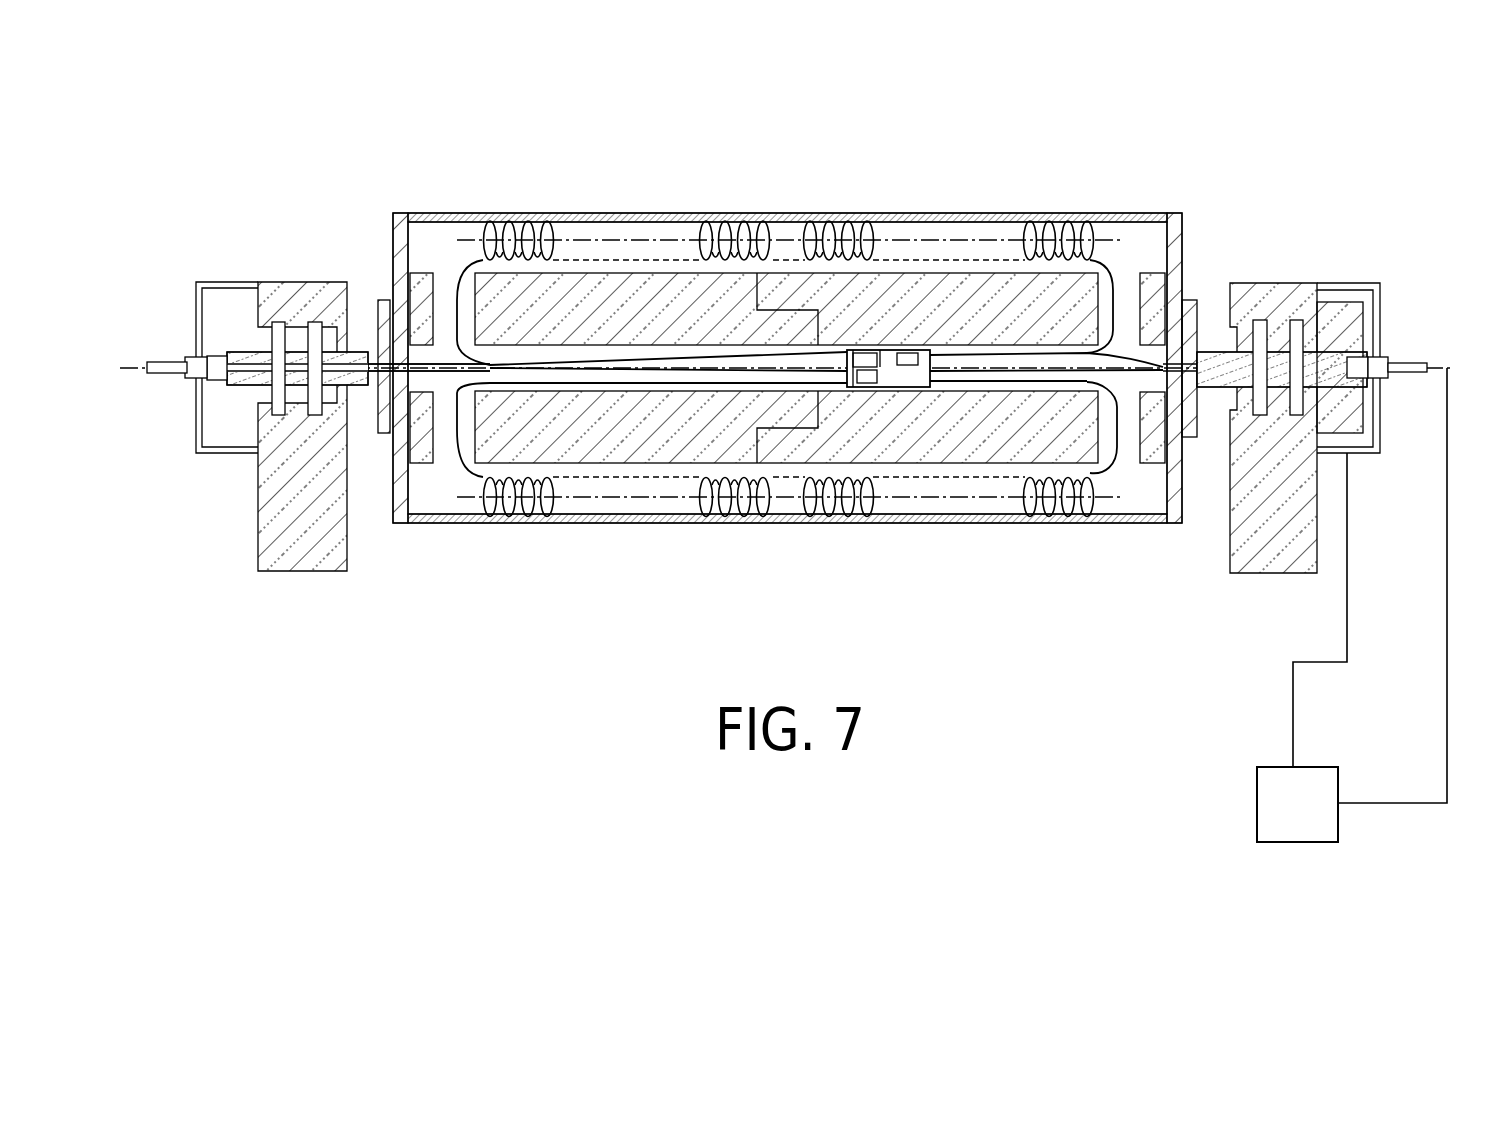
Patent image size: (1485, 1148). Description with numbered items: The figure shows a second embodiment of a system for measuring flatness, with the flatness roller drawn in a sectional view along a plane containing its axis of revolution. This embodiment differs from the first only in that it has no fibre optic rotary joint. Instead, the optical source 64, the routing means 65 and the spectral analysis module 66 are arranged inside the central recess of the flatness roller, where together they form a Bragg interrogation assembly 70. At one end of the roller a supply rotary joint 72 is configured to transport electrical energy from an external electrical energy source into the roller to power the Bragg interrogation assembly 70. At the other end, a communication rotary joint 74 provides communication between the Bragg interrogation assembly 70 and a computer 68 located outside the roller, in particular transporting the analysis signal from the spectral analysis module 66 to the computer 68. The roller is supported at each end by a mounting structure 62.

The support bracket 62 is at (1338, 318).
The optical source 64 is at (867, 357).
The routing means 65 is at (908, 357).
The spectral analysis module 66 is at (872, 377).
The computer 68 is at (1297, 804).
The Bragg interrogation assembly 70 is at (917, 390).
The supply rotary joint 72 is at (188, 380).
The communication rotary joint 74 is at (1373, 365).